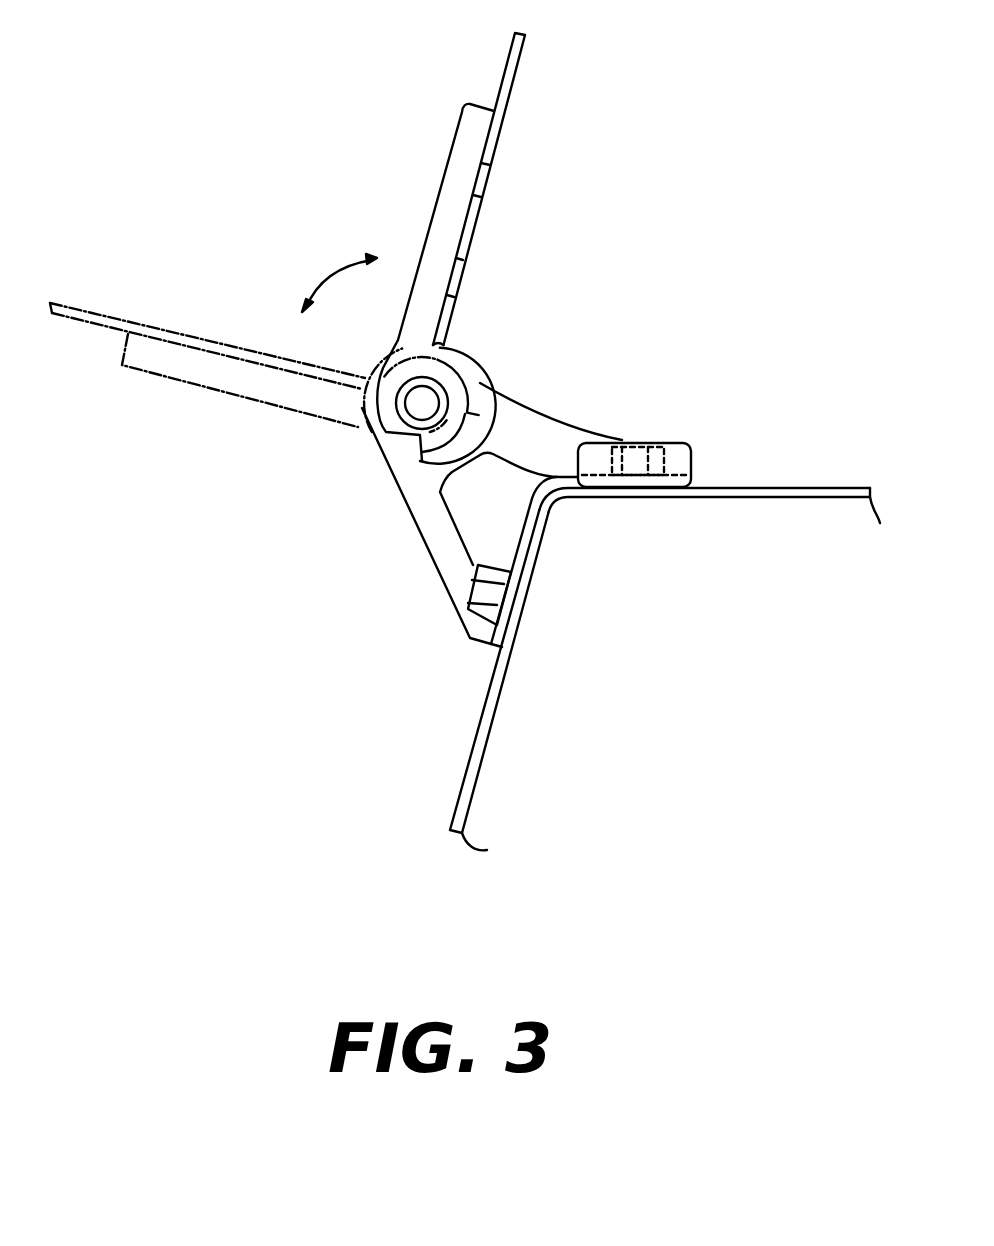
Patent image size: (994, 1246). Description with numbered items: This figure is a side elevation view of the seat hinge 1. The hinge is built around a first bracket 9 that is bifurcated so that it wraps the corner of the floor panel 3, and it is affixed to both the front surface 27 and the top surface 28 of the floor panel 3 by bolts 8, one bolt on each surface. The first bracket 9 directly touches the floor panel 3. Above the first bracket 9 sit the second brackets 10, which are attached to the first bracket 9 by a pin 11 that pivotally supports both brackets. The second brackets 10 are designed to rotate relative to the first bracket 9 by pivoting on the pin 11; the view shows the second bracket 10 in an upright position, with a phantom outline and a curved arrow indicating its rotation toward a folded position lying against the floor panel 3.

The seat hinge 1 is at (557, 173).
The floor panel 3 is at (457, 768).
The bolts 8 is at (637, 437).
The first bracket 9 is at (537, 420).
The second brackets 10 is at (457, 150).
The pin 11 is at (410, 403).
The front surface 27 is at (493, 705).
The top surface 28 is at (817, 487).